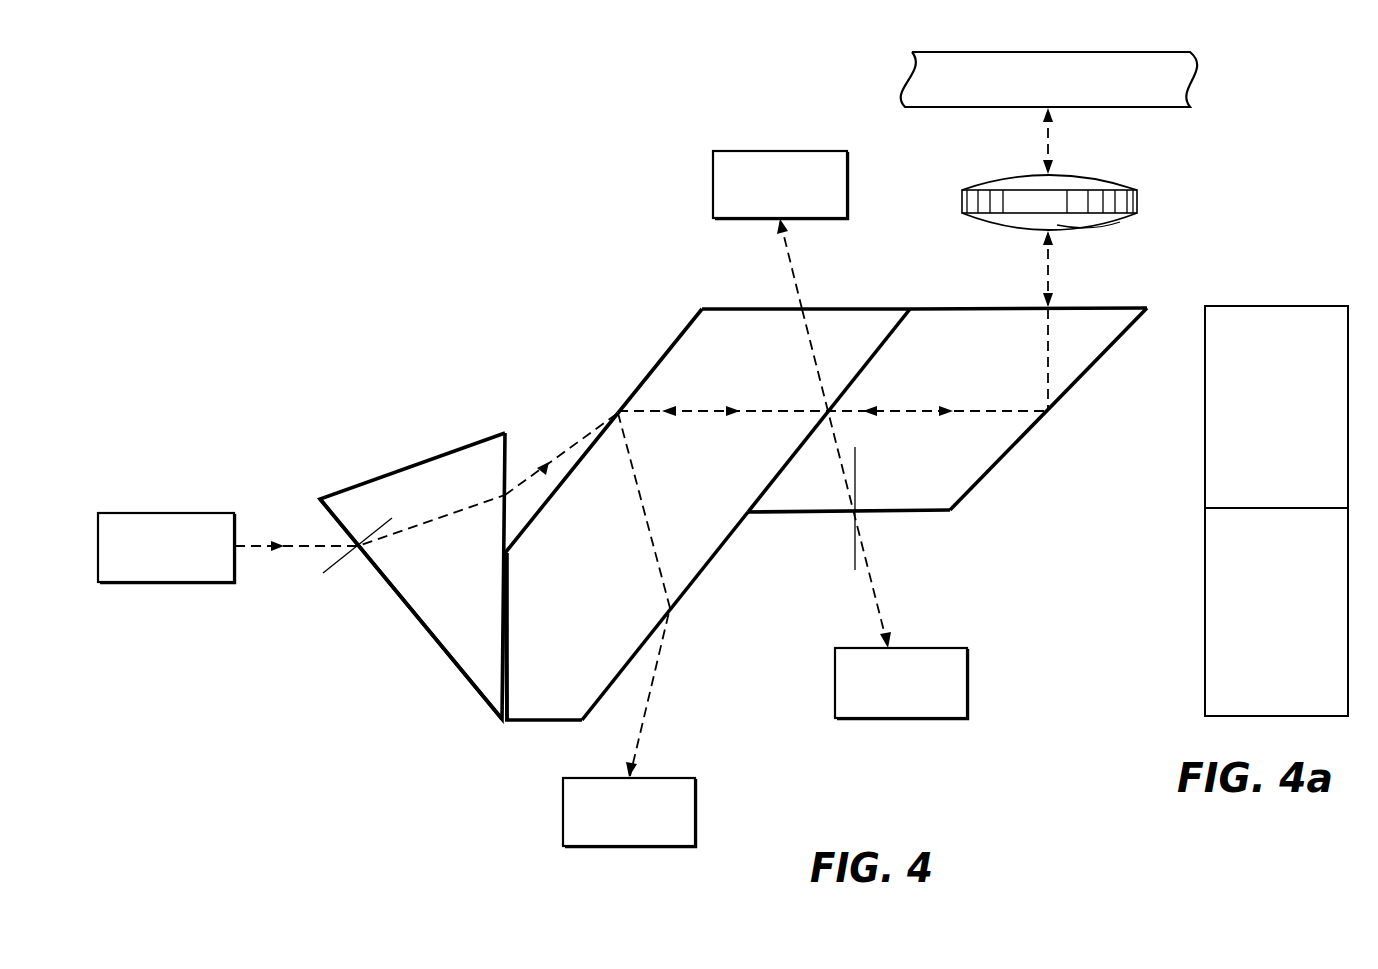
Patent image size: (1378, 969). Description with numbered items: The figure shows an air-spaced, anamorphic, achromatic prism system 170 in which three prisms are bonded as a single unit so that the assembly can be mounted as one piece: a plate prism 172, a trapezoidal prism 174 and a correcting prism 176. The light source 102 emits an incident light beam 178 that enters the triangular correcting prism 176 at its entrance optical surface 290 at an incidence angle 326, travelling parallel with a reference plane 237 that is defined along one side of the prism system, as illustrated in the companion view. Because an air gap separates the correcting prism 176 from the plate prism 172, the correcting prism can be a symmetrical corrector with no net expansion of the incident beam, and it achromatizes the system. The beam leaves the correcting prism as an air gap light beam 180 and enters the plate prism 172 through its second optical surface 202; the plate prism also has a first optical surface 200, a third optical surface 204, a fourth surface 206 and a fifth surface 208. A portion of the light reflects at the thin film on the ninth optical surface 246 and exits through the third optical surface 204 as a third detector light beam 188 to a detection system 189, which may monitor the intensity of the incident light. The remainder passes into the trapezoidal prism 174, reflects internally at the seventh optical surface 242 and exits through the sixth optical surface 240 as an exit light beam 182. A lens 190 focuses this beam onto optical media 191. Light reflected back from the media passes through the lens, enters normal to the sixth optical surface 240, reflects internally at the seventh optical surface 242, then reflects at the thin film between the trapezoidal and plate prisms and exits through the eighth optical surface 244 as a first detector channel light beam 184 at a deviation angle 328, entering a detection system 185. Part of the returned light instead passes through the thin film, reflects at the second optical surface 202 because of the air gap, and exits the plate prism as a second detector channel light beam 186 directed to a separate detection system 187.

In FIG. 4, the prism system 170 is at (437, 199).
In FIG. 4, the light source 102 is at (146, 512).
In FIG. 4, the light beam 178 is at (256, 544).
In FIG. 4, the incidence angle 326 is at (341, 554).
In FIG. 4, the correcting prism 176 is at (412, 566).
In FIG. 4, the optical surface S10 290 is at (450, 664).
In FIG. 4, the air gap light beam 180 is at (583, 436).
In FIG. 4, the optical surface S1 200 is at (823, 504).
In FIG. 4A, the optical surface S1 200 is at (1298, 619).
In FIG. 4, the plate prism 172 is at (712, 506).
In FIG. 4, the trapezoidal prism 174 is at (947, 401).
In FIG. 4, the optical surface S2 202 is at (656, 363).
In FIG. 4, the optical surface S3 204 is at (750, 306).
In FIG. 4, the surface S4 206 is at (509, 608).
In FIG. 4, the surface S5 208 is at (566, 722).
In FIG. 4, the optical surface S9 246 is at (918, 318).
In FIG. 4, the optical surface S6 240 is at (1118, 306).
In FIG. 4, the optical surface S7 242 is at (1010, 452).
In FIG. 4A, the optical surface S7 242 is at (1298, 379).
In FIG. 4, the optical surface S8 244 is at (900, 514).
In FIG. 4, the deviation angle 328 is at (855, 545).
In FIG. 4, the first detector channel light beam 184 is at (872, 590).
In FIG. 4, the detection system 185 is at (862, 648).
In FIG. 4, the second detector channel light beam 186 is at (652, 685).
In FIG. 4, the detection system 187 is at (675, 778).
In FIG. 4, the third detector light beam 188 is at (795, 286).
In FIG. 4, the detection system 189 is at (752, 150).
In FIG. 4, the lens 190 is at (978, 195).
In FIG. 4, the optical media 191 is at (936, 58).
In FIG. 4, the exit light beam 182 is at (1046, 282).
In FIG. 4A, the reference plane 237 is at (1354, 325).